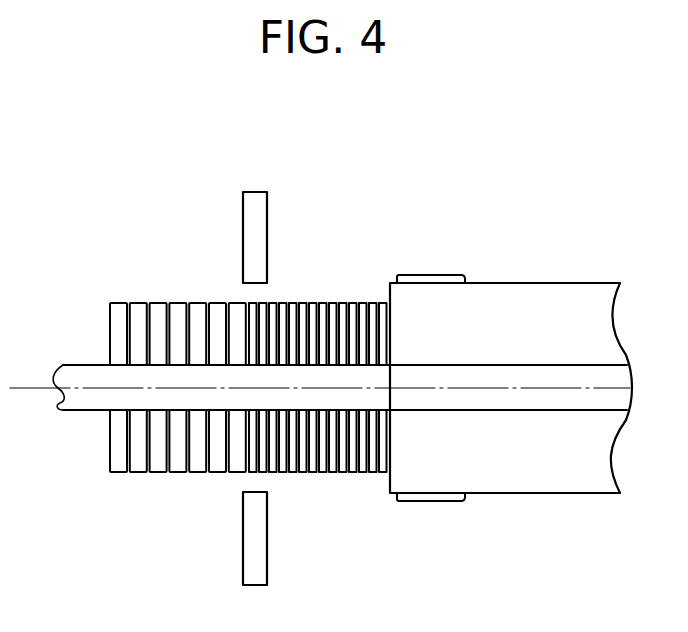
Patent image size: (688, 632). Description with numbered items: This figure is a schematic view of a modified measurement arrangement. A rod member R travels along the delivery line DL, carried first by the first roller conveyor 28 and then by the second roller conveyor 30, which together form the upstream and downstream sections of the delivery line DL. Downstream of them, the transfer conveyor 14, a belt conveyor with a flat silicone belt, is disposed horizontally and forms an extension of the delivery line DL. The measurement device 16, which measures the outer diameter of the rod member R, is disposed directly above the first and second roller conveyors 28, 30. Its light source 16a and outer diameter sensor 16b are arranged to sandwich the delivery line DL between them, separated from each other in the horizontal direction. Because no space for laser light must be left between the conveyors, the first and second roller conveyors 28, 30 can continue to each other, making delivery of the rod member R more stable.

The transfer conveyor 14 is at (527, 473).
The measurement device 16 is at (249, 351).
The light source 16a is at (248, 533).
The outer diameter sensor 16b is at (260, 217).
The first roller conveyor 28 is at (247, 301).
The second roller conveyor 30 is at (388, 301).
The rod member R is at (79, 370).
The delivery line DL is at (35, 393).